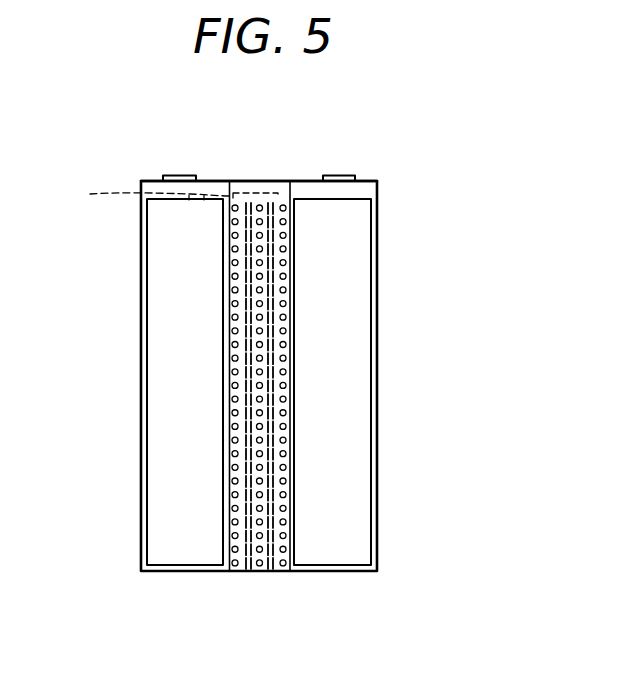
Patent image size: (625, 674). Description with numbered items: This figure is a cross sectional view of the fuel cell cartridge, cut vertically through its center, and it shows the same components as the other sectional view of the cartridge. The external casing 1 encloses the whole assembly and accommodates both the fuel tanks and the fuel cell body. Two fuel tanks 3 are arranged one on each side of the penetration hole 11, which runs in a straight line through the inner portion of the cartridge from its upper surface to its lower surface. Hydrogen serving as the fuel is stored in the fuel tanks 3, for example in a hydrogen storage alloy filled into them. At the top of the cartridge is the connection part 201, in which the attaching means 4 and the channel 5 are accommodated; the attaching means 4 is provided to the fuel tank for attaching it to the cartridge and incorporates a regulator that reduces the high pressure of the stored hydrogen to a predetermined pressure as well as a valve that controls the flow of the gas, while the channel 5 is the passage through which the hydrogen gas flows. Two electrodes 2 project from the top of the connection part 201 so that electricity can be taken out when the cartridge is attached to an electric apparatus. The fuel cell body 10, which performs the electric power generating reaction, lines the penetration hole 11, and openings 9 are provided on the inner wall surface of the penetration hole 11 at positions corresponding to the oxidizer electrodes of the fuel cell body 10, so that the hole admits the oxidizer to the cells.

The external casing 1 is at (379, 302).
The electrode 2 is at (178, 174).
The fuel tank 3 is at (162, 335).
The attaching means 4 is at (150, 194).
The channel 5 is at (250, 190).
The opening 9 is at (283, 566).
The fuel cell body 10 is at (236, 566).
The penetration hole 11 is at (293, 393).
The connection part 201 is at (369, 193).